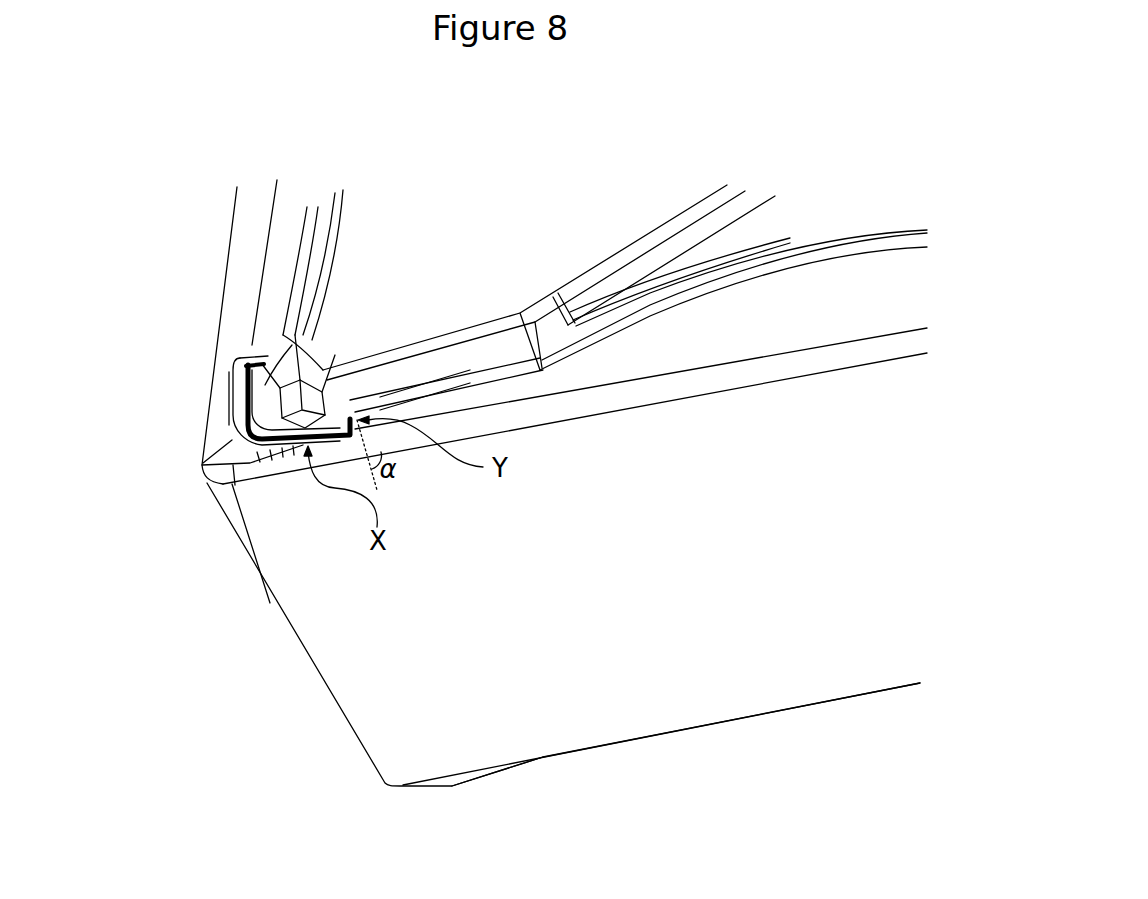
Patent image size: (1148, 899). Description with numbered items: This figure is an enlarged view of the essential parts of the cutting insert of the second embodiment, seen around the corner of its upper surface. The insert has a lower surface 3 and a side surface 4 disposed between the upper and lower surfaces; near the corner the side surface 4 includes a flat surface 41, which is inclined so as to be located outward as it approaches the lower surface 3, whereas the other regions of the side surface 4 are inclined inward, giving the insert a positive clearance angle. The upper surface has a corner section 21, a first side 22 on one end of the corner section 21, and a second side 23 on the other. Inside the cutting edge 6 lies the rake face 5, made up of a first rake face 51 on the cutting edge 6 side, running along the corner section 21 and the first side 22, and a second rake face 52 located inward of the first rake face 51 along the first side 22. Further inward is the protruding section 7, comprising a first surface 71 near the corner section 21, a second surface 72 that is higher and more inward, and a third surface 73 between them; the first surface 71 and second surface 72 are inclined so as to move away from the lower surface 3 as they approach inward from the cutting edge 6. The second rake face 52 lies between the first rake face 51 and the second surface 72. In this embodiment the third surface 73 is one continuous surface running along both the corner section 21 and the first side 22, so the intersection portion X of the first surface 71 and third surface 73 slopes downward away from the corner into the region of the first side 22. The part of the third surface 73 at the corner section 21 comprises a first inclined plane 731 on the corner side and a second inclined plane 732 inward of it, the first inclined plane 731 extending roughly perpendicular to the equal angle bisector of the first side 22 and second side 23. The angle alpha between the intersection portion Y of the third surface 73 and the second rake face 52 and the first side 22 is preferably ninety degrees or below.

The lower surface 3 is at (690, 723).
The side surface 4 is at (355, 665).
The flat surface 41 is at (240, 532).
The corner section 21 is at (207, 480).
The first side 22 is at (572, 420).
The second side 23 is at (205, 445).
The rake face 5 is at (568, 143).
The first rake face 51 is at (485, 427).
The second rake face 52 is at (453, 407).
The cutting edge 6 is at (272, 478).
The protruding section 7 is at (253, 73).
The first surface 71 is at (240, 440).
The second surface 72 is at (337, 322).
The third surface 73 is at (223, 190).
The first inclined plane 731 is at (232, 363).
The second inclined plane 732 is at (285, 358).